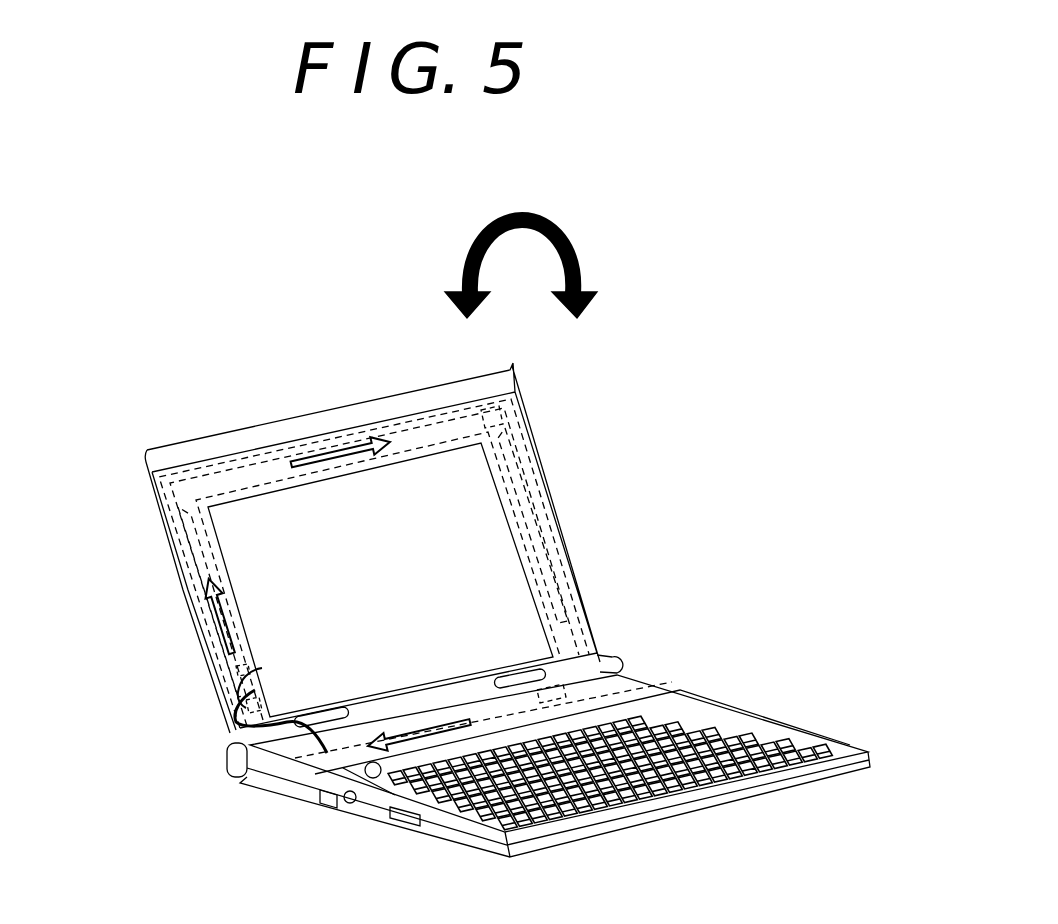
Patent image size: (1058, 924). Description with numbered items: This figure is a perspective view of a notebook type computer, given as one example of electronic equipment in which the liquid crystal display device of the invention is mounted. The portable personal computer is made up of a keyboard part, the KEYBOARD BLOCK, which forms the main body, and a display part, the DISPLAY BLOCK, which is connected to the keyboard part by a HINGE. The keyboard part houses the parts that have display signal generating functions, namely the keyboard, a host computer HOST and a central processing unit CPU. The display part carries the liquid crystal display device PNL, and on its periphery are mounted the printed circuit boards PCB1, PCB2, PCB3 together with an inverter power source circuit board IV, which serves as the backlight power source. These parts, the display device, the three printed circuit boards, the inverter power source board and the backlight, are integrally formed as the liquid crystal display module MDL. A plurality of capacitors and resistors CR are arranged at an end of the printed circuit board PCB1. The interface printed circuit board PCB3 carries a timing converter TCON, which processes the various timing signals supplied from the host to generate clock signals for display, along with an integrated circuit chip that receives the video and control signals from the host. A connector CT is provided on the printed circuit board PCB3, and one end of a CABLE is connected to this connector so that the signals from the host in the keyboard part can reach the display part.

The display part DISPLAY BLOCK is at (227, 428).
The liquid crystal display device PNL is at (380, 580).
The inverter power source circuit board IV is at (533, 507).
The liquid crystal display module MDL is at (573, 633).
The printed circuit board PCB1 is at (423, 420).
The printed circuit board PCB2 is at (490, 470).
The interface printed circuit board PCB3 is at (200, 545).
The capacitors/resistors CR is at (493, 413).
The timing converter TCON is at (277, 700).
The connector CT is at (228, 678).
The cable CABLE is at (213, 717).
The hinge HINGE is at (303, 720).
The keyboard part KEYBOARD BLOCK is at (697, 787).
The host HOST is at (600, 668).
The central processing unit CPU is at (605, 672).